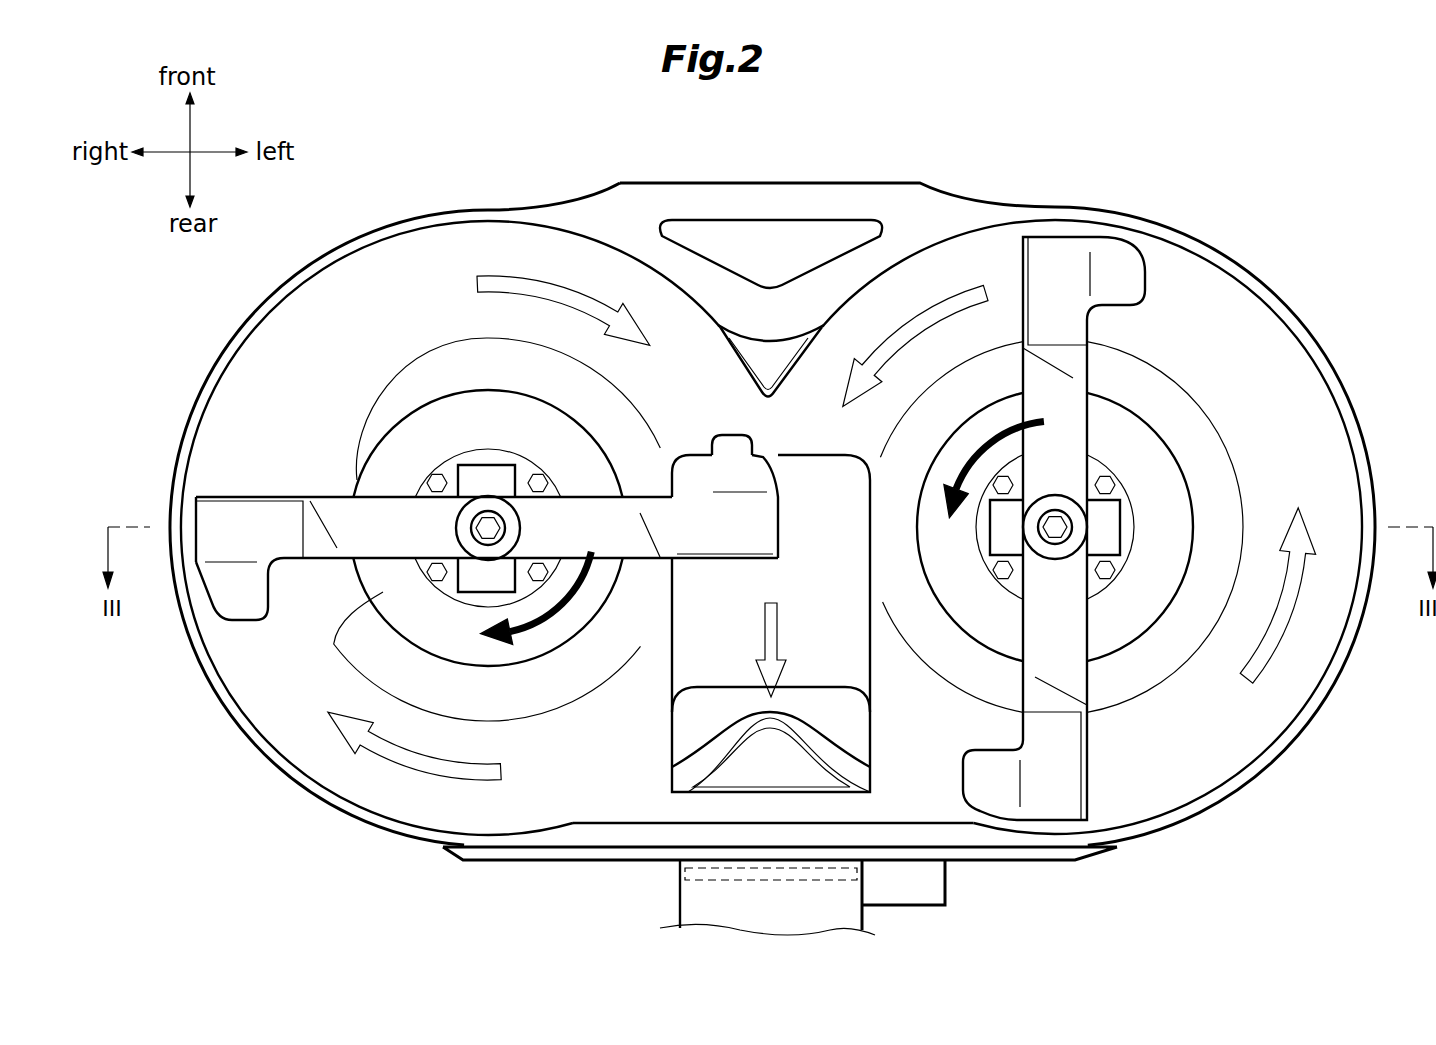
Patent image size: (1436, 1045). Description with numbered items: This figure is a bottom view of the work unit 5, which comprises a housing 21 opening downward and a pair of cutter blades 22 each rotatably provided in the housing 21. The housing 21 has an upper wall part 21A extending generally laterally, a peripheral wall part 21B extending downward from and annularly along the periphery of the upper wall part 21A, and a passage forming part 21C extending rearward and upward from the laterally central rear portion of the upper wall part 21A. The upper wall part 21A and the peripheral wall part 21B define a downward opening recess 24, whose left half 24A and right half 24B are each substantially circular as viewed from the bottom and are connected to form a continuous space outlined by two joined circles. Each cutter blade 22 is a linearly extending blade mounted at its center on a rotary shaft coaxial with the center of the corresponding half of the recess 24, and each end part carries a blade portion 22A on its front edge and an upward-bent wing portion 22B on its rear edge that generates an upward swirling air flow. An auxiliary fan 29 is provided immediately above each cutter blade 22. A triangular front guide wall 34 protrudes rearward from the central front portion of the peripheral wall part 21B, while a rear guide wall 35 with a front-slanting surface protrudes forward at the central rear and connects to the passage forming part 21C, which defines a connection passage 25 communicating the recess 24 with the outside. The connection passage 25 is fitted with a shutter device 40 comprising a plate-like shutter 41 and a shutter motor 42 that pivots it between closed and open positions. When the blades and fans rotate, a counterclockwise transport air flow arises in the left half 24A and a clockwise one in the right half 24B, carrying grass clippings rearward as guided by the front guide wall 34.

The work unit 5 is at (1130, 110).
The housing 21 is at (890, 176).
The upper wall part 21A is at (1240, 335).
The peripheral wall part 21B is at (1318, 362).
The passage forming part 21C is at (688, 905).
The cutter blade 22 is at (336, 490).
The blade portion 22A is at (232, 497).
The wing portion 22B is at (243, 615).
The recess 24 is at (440, 265).
The left half 24A is at (1178, 278).
The right half 24B is at (348, 305).
The connection passage 25 is at (672, 735).
The auxiliary fan 29 is at (320, 617).
The front guide wall 34 is at (783, 382).
The rear guide wall 35 is at (815, 735).
The shutter device 40 is at (972, 910).
The shutter 41 is at (805, 882).
The shutter motor 42 is at (933, 883).